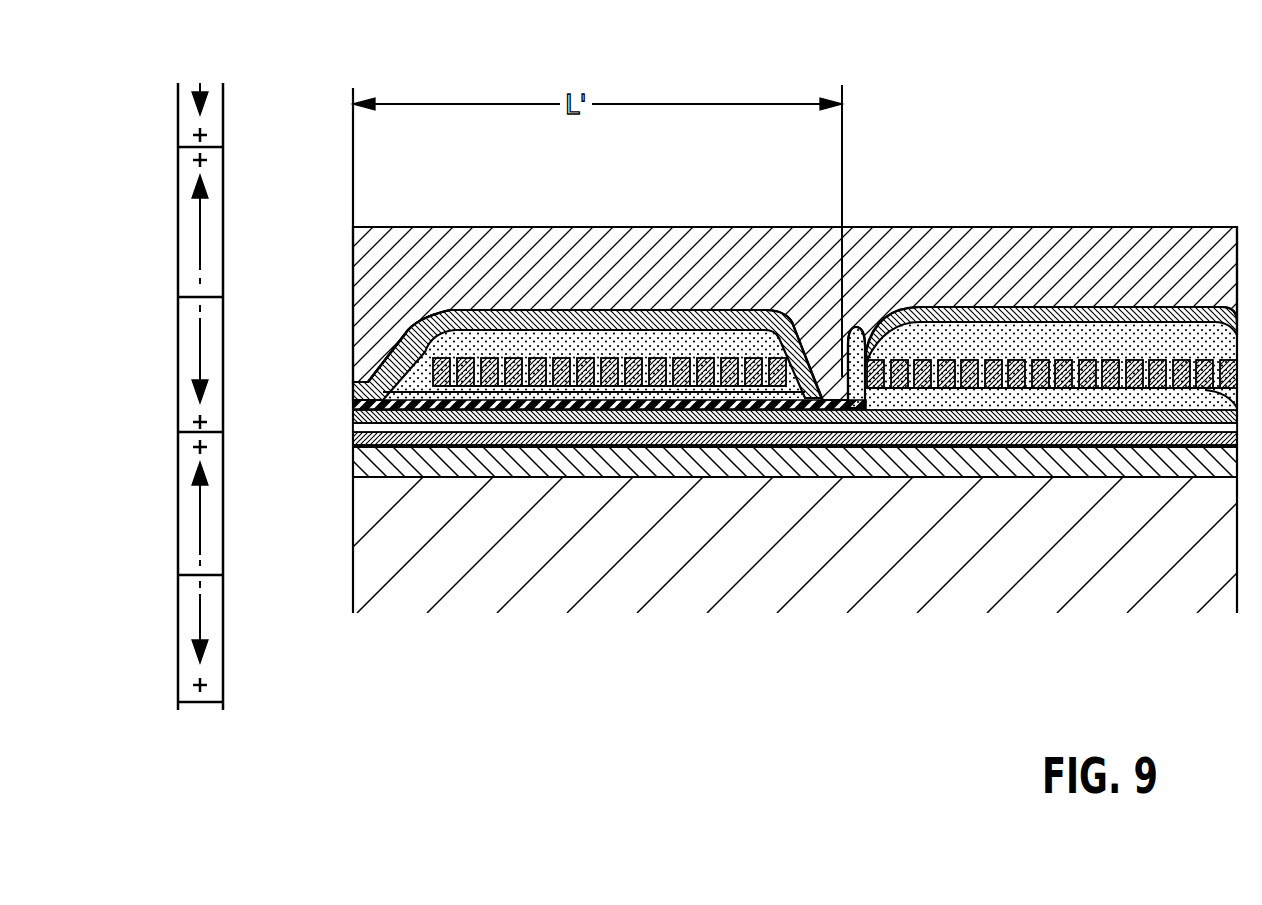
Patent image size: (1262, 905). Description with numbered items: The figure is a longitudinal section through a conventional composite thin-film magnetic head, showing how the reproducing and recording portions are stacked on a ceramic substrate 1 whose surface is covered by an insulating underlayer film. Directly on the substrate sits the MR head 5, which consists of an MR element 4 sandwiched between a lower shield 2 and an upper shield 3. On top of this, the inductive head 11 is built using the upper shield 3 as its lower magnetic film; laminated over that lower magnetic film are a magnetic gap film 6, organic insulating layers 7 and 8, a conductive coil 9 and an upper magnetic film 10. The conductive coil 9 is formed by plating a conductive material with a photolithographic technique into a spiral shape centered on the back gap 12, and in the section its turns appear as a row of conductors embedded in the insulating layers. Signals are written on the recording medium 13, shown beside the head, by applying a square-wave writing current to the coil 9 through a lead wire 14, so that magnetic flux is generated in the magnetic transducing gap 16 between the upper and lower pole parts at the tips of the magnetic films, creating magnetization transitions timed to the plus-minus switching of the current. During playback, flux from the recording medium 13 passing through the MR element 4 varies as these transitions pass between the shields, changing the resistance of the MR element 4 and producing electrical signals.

The ceramic substrate 1 is at (352, 584).
The lower shield 2 is at (352, 438).
The upper shield 3 is at (352, 405).
The MR element 4 is at (352, 427).
The MR head 5 is at (746, 423).
The magnetic gap film 6 is at (580, 402).
The organic insulating layer 7 is at (405, 333).
The organic insulating layer 8 is at (527, 337).
The conductive coil 9 is at (630, 367).
The upper magnetic film 10 is at (480, 318).
The inductive head 11 is at (573, 298).
The back gap 12 is at (857, 325).
The recording medium 13 is at (223, 125).
The lead wire 14 is at (1040, 310).
The magnetic transducing gap 16 is at (352, 400).